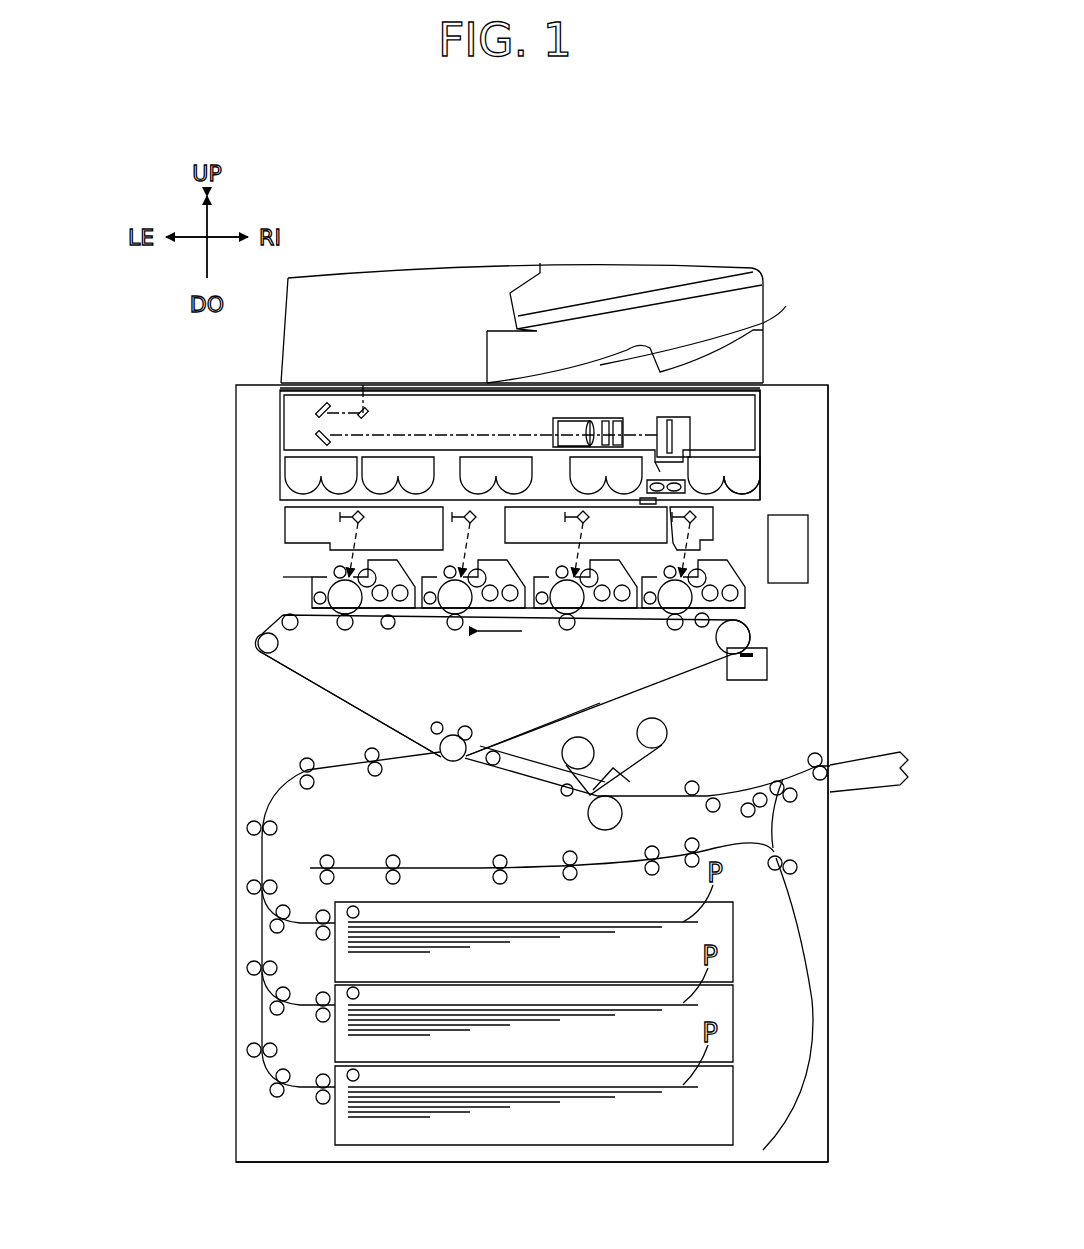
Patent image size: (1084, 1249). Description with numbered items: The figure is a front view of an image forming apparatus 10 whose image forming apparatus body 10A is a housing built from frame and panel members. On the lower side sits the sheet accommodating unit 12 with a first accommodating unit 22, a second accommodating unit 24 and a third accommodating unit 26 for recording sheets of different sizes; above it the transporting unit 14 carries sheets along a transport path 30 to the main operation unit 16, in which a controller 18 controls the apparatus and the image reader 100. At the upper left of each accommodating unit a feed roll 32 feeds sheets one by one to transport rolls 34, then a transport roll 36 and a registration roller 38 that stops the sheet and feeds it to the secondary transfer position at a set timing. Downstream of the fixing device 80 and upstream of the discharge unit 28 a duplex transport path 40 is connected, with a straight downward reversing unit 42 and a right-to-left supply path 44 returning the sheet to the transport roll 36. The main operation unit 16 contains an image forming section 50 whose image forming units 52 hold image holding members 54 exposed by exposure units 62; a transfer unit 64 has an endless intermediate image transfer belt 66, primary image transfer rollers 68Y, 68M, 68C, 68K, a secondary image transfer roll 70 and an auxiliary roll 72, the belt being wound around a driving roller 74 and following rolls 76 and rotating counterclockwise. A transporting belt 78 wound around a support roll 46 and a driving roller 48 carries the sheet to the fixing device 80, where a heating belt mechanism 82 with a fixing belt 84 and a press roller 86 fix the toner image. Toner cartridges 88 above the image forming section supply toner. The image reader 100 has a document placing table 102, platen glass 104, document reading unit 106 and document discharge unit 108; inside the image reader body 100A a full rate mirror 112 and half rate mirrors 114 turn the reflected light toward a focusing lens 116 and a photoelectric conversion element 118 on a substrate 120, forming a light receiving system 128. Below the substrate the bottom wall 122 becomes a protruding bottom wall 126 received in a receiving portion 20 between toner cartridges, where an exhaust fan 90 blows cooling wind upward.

The image forming apparatus 10 is at (858, 291).
The image forming apparatus body 10A is at (830, 672).
The sheet accommodating unit 12 is at (738, 1146).
The transporting unit 14 is at (249, 803).
The main operation unit 16 is at (239, 581).
The controller 18 is at (808, 555).
The receiving portion 20 is at (690, 476).
The first accommodating unit 22 is at (735, 1077).
The second accommodating unit 24 is at (735, 1022).
The third accommodating unit 26 is at (735, 942).
The discharge unit 28 is at (900, 752).
The transport path 30 is at (249, 778).
The feed roll 32 is at (360, 913).
The transport roll 34 is at (300, 1121).
The transport roll 36 is at (305, 756).
The registration roller 38 is at (374, 777).
The duplex transport path 40 is at (791, 888).
The reversing unit 42 is at (814, 1003).
The supply path 44 is at (418, 866).
The support roll 46 is at (493, 766).
The driving roller 48 is at (567, 797).
The image forming section 50 is at (299, 592).
The image forming unit 52 is at (745, 593).
The image holding member 54 is at (545, 618).
The exposure unit 62 is at (710, 524).
The transfer unit 64 is at (289, 683).
The intermediate image transfer belt 66 is at (560, 710).
The primary image transfer roller 68K is at (345, 632).
The primary image transfer roller 68C is at (455, 632).
The primary image transfer roller 68M is at (567, 632).
The primary image transfer roller 68Y is at (673, 628).
The secondary image transfer roll 70 is at (453, 762).
The auxiliary roll 72 is at (466, 728).
The driving roller 74 is at (751, 638).
The following roll 76 is at (388, 630).
The transporting belt 78 is at (530, 786).
The fixing device 80 is at (680, 737).
The heating belt mechanism 82 is at (634, 721).
The fixing belt 84 is at (640, 758).
The press roller 86 is at (623, 815).
The toner cartridge 88 is at (752, 480).
The exhaust fan 90 is at (648, 505).
The image reader 100 is at (425, 261).
The image reader body 100A is at (770, 399).
The document placing table 102 is at (690, 275).
The platen glass 104 is at (300, 384).
The document reading unit 106 is at (768, 423).
The document discharge unit 108 is at (651, 329).
The full rate mirror 112 is at (372, 414).
The half rate mirror 114 is at (310, 412).
The focusing lens 116 is at (555, 420).
The photoelectric conversion element 118 is at (660, 420).
The substrate 120 is at (673, 475).
The bottom wall 122 is at (315, 455).
The protruding bottom wall 126 is at (660, 466).
The light receiving system 128 is at (695, 440).